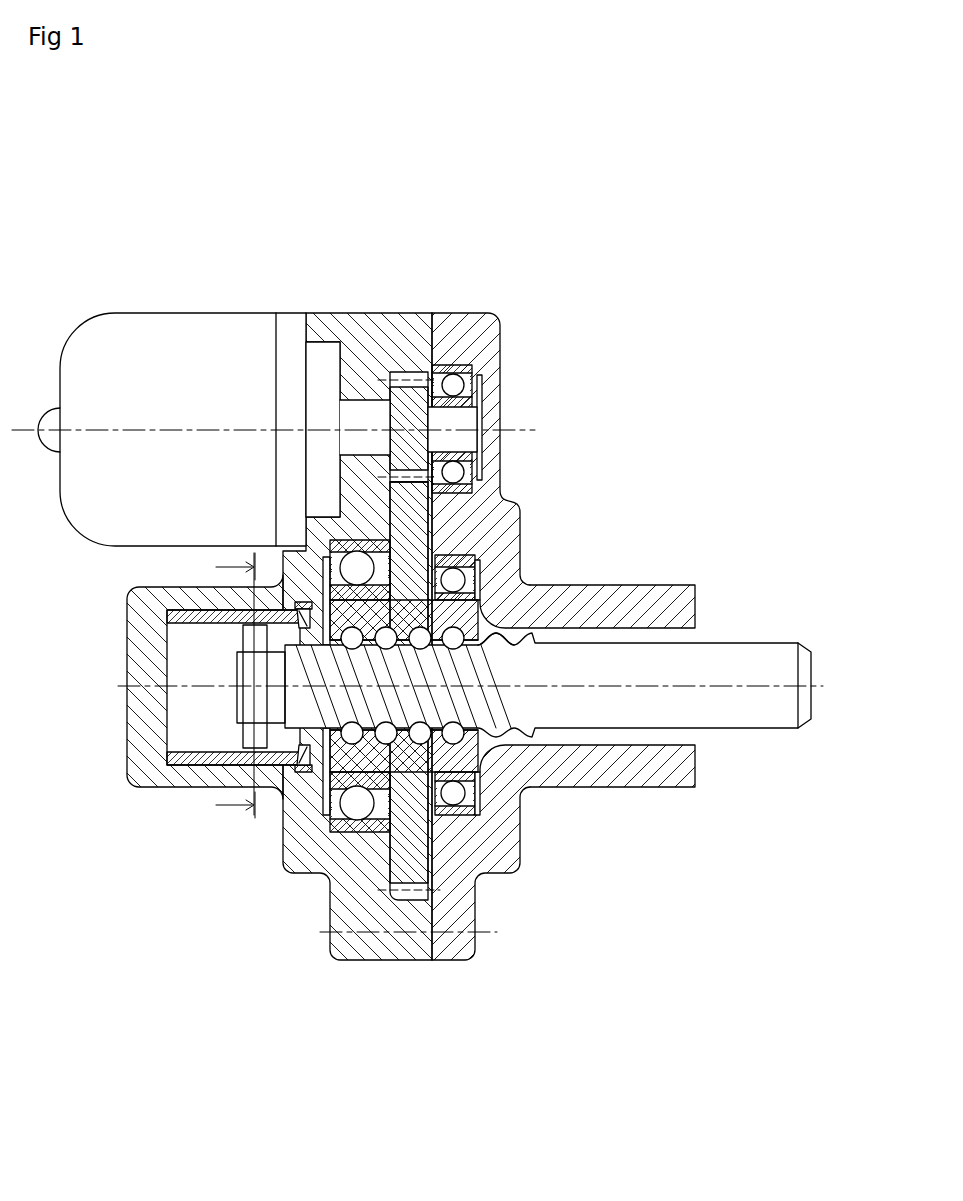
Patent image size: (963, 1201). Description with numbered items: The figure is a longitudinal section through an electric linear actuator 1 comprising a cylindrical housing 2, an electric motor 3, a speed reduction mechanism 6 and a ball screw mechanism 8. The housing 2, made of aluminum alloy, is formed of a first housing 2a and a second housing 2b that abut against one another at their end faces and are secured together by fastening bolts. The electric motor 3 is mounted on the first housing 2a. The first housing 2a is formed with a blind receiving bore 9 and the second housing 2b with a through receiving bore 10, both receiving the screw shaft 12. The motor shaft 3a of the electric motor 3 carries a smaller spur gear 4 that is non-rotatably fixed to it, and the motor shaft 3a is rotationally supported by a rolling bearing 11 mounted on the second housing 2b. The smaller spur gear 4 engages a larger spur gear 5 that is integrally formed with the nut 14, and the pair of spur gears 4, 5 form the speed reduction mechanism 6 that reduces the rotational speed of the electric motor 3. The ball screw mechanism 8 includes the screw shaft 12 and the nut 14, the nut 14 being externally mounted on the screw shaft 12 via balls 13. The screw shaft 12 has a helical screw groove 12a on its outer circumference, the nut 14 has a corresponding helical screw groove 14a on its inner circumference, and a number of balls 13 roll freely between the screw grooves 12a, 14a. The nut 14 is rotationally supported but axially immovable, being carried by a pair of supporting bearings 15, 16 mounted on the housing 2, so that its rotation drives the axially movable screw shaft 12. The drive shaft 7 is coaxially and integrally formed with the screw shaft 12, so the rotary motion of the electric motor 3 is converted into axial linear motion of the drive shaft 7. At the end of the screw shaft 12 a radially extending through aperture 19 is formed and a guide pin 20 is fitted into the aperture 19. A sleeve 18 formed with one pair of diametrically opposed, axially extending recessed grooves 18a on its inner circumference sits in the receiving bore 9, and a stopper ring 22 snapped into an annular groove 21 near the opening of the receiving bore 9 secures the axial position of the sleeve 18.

The electric linear actuator 1 is at (666, 355).
The cylindrical housing 2 is at (455, 258).
The first housing 2a is at (397, 325).
The second housing 2b is at (448, 325).
The electric motor 3 is at (213, 313).
The motor shaft 3a is at (470, 440).
The smaller spur gear 4 is at (413, 418).
The larger spur gear 5 is at (413, 512).
The speed reduction mechanism 6 is at (562, 413).
The drive shaft 7 is at (775, 655).
The ball screw mechanism 8 is at (483, 770).
The receiving bore 9 is at (194, 748).
The receiving bore 10 is at (655, 627).
The rolling bearing 11 is at (470, 462).
The screw shaft 12 is at (553, 661).
The helical screw groove 12a is at (533, 648).
The balls 13 is at (388, 650).
The nut 14 is at (486, 768).
The helical screw groove 14a is at (527, 712).
The supporting bearing 15 is at (320, 544).
The supporting bearing 16 is at (480, 563).
The sleeve 18 is at (170, 752).
The recessed grooves 18a is at (180, 630).
The through aperture 19 is at (247, 689).
The guide pin 20 is at (245, 728).
The annular groove 21 is at (300, 622).
The stopper ring 22 is at (300, 768).